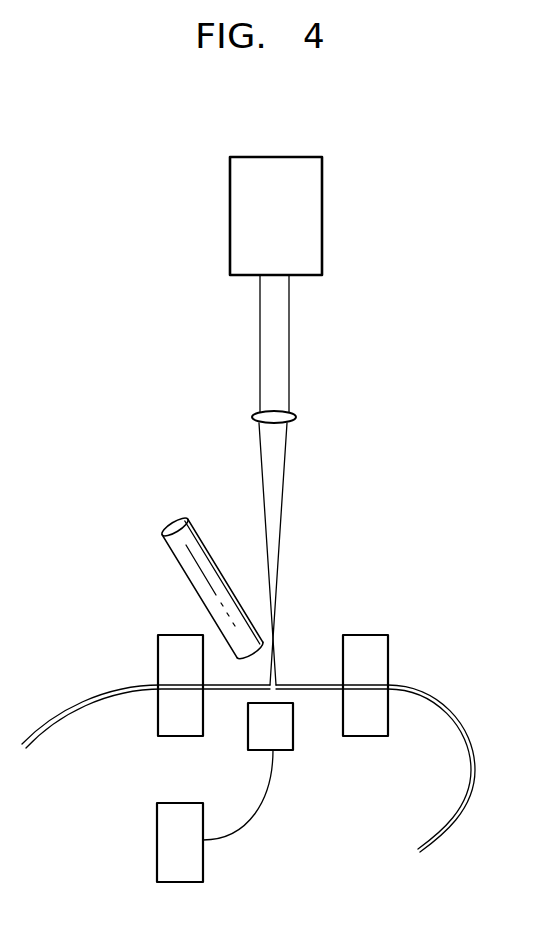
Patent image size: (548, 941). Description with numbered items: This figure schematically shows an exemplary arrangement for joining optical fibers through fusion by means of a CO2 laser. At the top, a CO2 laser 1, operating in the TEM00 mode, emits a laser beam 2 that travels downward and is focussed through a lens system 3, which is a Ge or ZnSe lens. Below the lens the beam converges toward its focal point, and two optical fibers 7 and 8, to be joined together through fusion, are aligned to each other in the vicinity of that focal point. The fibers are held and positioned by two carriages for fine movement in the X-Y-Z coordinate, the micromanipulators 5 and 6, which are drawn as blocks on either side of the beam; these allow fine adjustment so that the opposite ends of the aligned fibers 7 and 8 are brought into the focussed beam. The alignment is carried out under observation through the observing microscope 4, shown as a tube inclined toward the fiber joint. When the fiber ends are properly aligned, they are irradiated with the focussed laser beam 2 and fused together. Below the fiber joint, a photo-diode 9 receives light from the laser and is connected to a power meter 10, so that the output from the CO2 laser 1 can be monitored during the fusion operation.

The CO2 laser 1 is at (325, 207).
The laser beam 2 is at (290, 330).
The lens system 3 is at (296, 417).
The observing microscope 4 is at (207, 553).
The carriage for fine movement (micromanipulator) 5 is at (390, 650).
The carriage for fine movement (micromanipulator) 6 is at (156, 650).
The optical fiber 7 is at (442, 712).
The optical fiber 8 is at (78, 708).
The photo-diode 9 is at (294, 745).
The power meter 10 is at (156, 842).